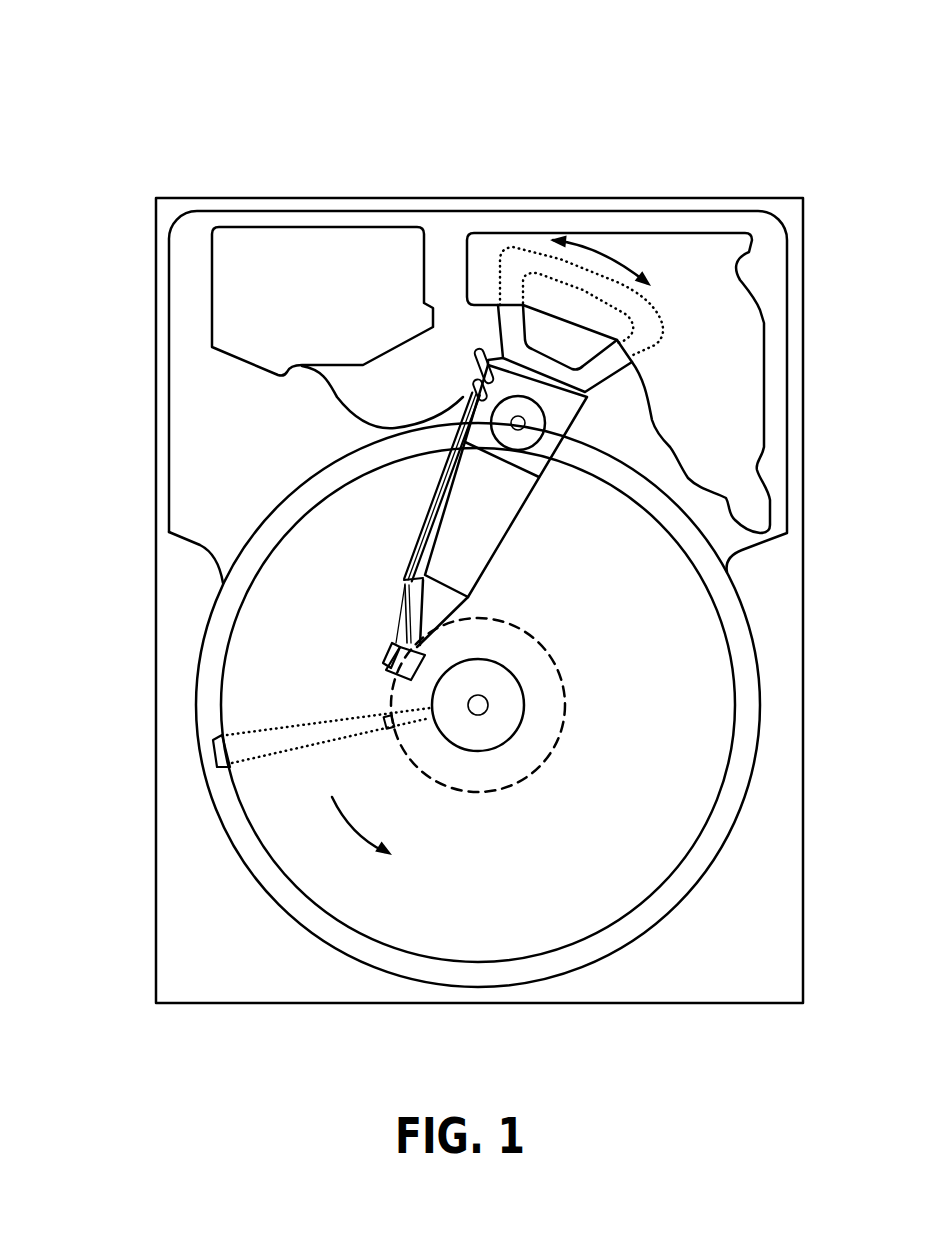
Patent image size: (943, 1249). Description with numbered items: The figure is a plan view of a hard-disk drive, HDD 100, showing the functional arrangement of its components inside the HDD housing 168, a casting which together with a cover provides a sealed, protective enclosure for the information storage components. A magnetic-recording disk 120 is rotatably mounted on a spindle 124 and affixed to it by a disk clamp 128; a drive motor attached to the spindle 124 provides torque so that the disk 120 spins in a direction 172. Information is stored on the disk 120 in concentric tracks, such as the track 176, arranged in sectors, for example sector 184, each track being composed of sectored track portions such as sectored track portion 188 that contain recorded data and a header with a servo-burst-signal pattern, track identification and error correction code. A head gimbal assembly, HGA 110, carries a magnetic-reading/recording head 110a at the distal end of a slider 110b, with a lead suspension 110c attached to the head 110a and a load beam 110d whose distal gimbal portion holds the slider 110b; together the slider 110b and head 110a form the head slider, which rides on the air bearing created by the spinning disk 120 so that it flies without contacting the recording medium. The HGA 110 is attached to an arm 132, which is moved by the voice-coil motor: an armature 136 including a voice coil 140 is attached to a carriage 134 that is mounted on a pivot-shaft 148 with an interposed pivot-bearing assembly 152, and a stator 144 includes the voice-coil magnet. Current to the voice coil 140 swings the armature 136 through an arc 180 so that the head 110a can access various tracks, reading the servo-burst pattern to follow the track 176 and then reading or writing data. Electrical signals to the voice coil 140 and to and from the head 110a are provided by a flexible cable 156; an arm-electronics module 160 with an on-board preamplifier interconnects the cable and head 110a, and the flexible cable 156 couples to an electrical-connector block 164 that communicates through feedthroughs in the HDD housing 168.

The HDD 100 is at (84, 76).
The head gimbal assembly 110 is at (80, 512).
The magnetic-reading/recording head 110a is at (395, 637).
The slider 110b is at (413, 630).
The lead suspension 110c is at (413, 610).
The load beam 110d is at (410, 580).
The magnetic-recording disk 120 is at (660, 660).
The spindle 124 is at (488, 705).
The disk clamp 128 is at (505, 722).
The arm 132 is at (472, 540).
The carriage 134 is at (537, 457).
The armature 136 is at (497, 305).
The voice coil 140 is at (515, 315).
The stator 144 is at (730, 325).
The pivot-shaft 148 is at (525, 423).
The pivot-bearing assembly 152 is at (532, 435).
The flexible cable 156 is at (337, 400).
The arm-electronics module 160 is at (470, 390).
The electrical-connector block 164 is at (236, 298).
The HDD housing 168 is at (782, 210).
The direction 172 is at (365, 830).
The track 176 is at (553, 665).
The arc 180 is at (600, 250).
The sector 184 is at (207, 753).
The sectored track portion 188 is at (382, 718).